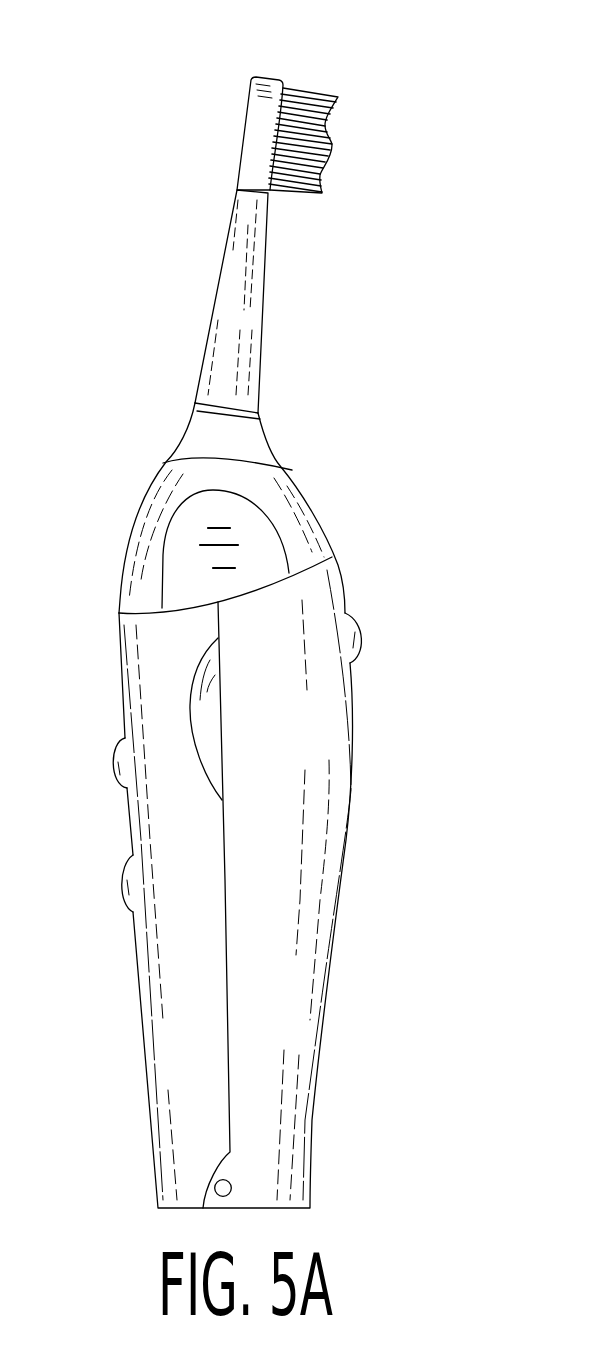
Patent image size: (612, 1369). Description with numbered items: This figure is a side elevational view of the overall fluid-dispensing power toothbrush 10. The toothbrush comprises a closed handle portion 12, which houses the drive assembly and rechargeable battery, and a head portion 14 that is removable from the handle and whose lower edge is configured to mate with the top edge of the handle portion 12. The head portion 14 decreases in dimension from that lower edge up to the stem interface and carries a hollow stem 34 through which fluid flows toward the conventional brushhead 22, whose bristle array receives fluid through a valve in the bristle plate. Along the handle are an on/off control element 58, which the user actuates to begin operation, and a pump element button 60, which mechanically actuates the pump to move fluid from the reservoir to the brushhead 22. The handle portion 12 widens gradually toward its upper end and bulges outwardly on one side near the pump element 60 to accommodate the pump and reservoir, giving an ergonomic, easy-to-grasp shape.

The fluid-dispensing power toothbrush 10 is at (373, 427).
The handle portion 12 is at (324, 1013).
The head portion 14 is at (125, 512).
The brushhead 22 is at (315, 78).
The hollow stem 34 is at (261, 302).
The on/off control element 58 is at (113, 752).
The pump element button 60 is at (350, 635).